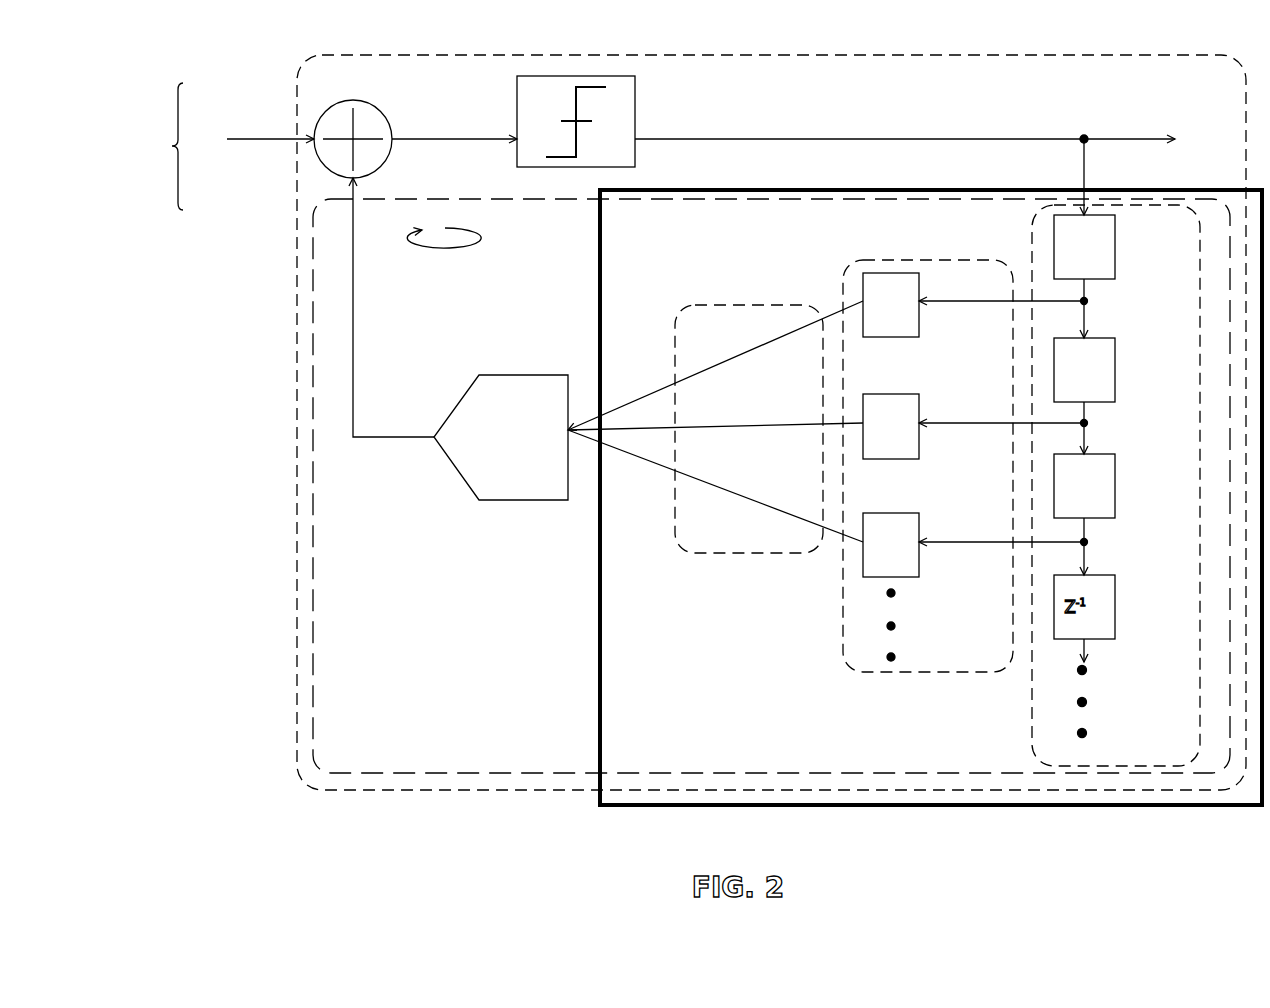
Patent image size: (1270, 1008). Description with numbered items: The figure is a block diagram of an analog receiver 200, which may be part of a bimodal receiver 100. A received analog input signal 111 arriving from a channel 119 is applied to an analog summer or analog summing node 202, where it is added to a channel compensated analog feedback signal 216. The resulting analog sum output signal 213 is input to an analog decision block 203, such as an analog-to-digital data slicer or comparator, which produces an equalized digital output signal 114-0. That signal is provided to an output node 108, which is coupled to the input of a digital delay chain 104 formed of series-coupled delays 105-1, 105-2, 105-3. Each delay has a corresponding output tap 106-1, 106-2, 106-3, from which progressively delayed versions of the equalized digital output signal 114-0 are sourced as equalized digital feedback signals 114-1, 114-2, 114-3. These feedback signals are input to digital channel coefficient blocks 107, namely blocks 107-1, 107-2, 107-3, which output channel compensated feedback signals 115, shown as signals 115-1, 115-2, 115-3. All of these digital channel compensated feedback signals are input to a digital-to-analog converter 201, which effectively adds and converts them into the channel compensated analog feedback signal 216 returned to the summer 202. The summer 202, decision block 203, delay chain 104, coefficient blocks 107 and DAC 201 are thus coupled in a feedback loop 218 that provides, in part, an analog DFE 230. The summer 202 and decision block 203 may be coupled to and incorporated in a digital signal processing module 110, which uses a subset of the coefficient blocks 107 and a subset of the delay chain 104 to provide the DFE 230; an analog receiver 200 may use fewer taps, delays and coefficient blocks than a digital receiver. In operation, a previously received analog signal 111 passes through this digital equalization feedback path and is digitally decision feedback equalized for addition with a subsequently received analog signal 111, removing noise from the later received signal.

The bimodal receiver 100 is at (292, 830).
The delay chain 104 is at (1031, 690).
The delay 105-1 is at (1116, 252).
The delay 105-2 is at (1116, 374).
The delay 105-3 is at (1116, 490).
The output tap 106-1 is at (1088, 303).
The output tap 106-2 is at (1088, 425).
The output tap 106-3 is at (1088, 544).
The digital channel coefficient blocks 107 is at (856, 264).
The channel coefficient block 107-1 is at (912, 338).
The channel coefficient block 107-2 is at (912, 460).
The channel coefficient block 107-3 is at (919, 512).
The output node 108 is at (1082, 136).
The digital signal processing module 110 is at (598, 606).
The received analog input signal 111 is at (270, 133).
The equalized digital output signal 114-0 is at (1162, 138).
The equalized digital feedback signal 114-1 is at (996, 305).
The equalized digital feedback signal 114-2 is at (999, 428).
The equalized digital feedback signal 114-3 is at (999, 548).
The channel compensated feedback signals 115 is at (682, 556).
The channel compensated feedback signal 115-1 is at (712, 358).
The channel compensated feedback signal 115-2 is at (722, 426).
The channel compensated feedback signal 115-3 is at (760, 508).
The channel 119 is at (158, 146).
The analog receiver 200 is at (296, 552).
The digital-to-analog converter 201 is at (501, 437).
The analog summing node 202 is at (368, 103).
The analog decision block 203 is at (640, 112).
The analog sum output signal 213 is at (408, 134).
The channel compensated analog feedback signal 216 is at (355, 296).
The feedback loop 218 is at (478, 237).
The analog DFE 230 is at (314, 684).